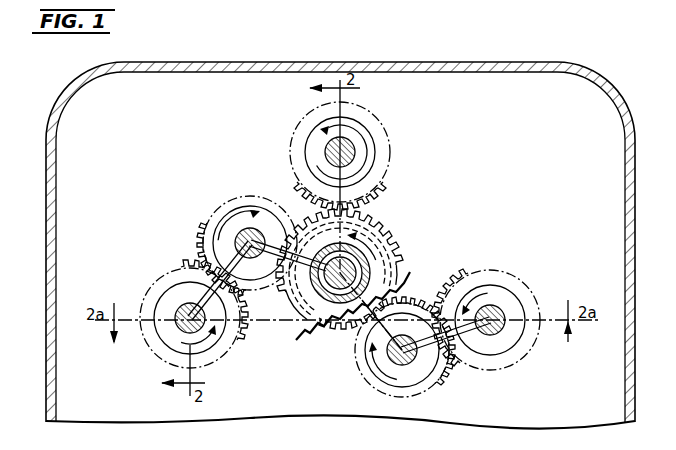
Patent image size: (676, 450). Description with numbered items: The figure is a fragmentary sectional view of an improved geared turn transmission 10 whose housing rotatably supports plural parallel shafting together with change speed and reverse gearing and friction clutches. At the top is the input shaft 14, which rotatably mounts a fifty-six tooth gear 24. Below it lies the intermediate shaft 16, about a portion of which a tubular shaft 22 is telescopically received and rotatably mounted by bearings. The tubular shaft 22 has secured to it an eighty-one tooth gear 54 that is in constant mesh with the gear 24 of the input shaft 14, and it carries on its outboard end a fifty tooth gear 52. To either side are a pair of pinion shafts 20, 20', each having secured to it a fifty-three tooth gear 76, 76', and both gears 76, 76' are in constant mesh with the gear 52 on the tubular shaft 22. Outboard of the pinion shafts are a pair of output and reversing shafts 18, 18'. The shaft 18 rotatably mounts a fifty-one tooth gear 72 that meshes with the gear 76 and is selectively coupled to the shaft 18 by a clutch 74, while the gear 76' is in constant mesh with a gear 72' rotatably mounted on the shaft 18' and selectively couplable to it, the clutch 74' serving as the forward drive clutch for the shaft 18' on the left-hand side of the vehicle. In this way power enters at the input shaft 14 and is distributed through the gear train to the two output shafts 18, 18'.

The geared turn transmission 10 is at (366, 54).
The input shaft 14 is at (355, 150).
The gear 24 is at (378, 178).
The gear 54 is at (380, 208).
The intermediate shaft 16 is at (360, 262).
The tubular shaft 22 is at (300, 326).
The gear 52 is at (382, 302).
The output and reversing shaft 18 is at (201, 318).
The clutch 74 is at (174, 325).
The gear 72 is at (195, 298).
The pinion shaft 20 is at (247, 236).
The gear 76 is at (236, 237).
The output and reversing shaft 18' is at (497, 311).
The clutch 74' is at (505, 330).
The gear 72' is at (461, 331).
The pinion shaft 20' is at (403, 355).
The gear 76' is at (377, 350).